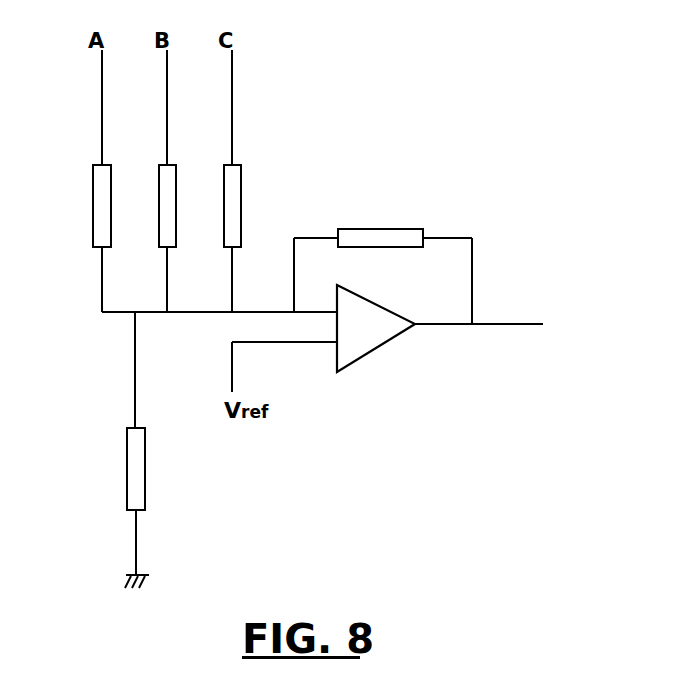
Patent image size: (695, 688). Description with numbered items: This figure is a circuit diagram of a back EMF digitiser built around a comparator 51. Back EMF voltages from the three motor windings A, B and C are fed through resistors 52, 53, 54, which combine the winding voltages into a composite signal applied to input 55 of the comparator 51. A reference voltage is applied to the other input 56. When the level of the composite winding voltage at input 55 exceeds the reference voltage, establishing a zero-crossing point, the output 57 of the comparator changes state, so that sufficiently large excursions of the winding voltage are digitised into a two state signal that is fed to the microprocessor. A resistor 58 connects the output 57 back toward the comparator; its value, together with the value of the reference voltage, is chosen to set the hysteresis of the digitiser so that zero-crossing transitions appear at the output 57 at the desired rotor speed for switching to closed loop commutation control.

The comparator 51 is at (378, 352).
The resistor 52 is at (90, 198).
The resistor 53 is at (155, 195).
The resistor 54 is at (224, 192).
The input 55 is at (332, 297).
The input 56 is at (332, 357).
The output 57 is at (482, 327).
The resistor 58 is at (383, 227).